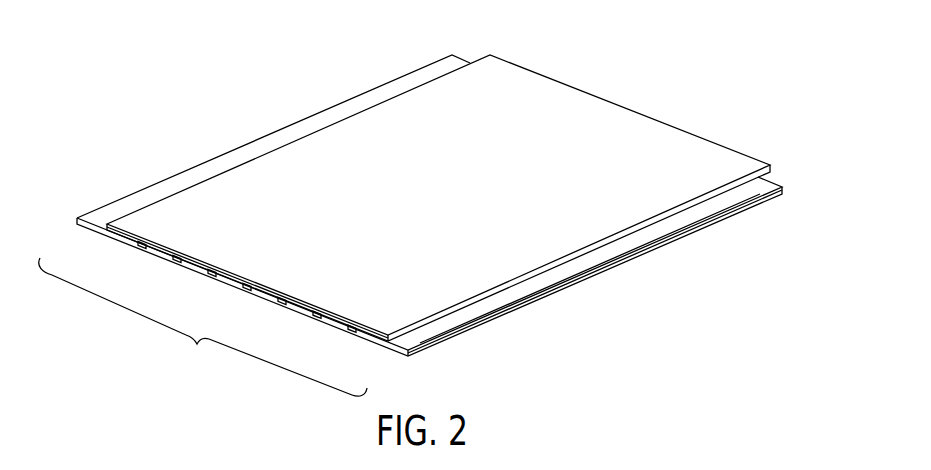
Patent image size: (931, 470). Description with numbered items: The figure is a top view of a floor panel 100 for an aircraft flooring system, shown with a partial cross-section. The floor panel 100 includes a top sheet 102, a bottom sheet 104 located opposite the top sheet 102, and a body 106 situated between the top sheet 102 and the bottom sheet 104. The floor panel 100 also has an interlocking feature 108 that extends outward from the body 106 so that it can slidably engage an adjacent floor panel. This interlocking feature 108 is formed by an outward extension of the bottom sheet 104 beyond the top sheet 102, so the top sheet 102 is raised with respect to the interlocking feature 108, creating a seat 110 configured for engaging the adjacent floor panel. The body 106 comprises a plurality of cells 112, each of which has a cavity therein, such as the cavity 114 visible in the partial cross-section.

The floor panel 100 is at (222, 120).
The top sheet 102 is at (359, 132).
The bottom sheet 104 is at (327, 323).
The body 106 is at (420, 347).
The interlocking feature 108 is at (177, 185).
The seat 110 is at (447, 312).
The cells 112 is at (203, 327).
The cavity 114 is at (195, 262).